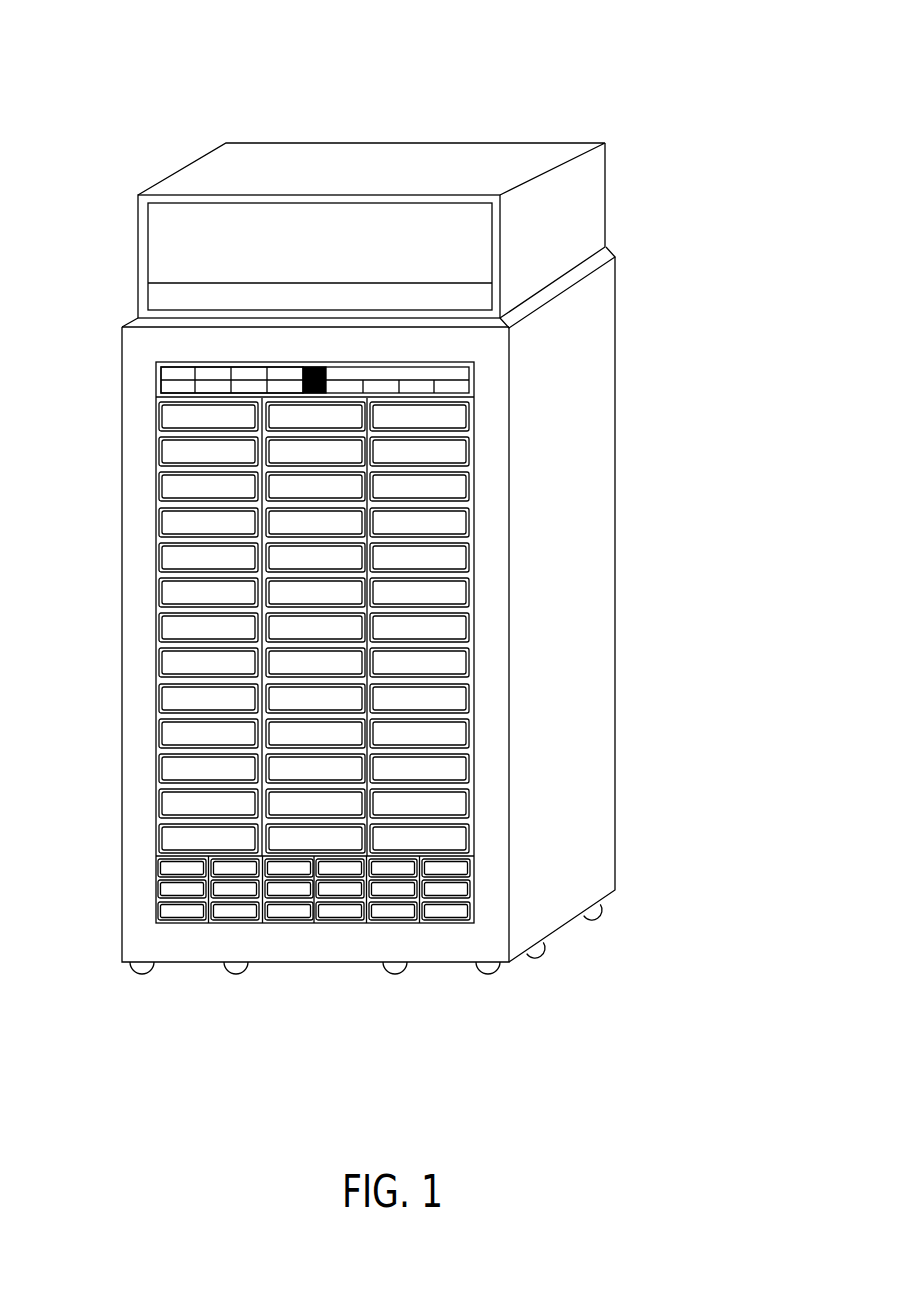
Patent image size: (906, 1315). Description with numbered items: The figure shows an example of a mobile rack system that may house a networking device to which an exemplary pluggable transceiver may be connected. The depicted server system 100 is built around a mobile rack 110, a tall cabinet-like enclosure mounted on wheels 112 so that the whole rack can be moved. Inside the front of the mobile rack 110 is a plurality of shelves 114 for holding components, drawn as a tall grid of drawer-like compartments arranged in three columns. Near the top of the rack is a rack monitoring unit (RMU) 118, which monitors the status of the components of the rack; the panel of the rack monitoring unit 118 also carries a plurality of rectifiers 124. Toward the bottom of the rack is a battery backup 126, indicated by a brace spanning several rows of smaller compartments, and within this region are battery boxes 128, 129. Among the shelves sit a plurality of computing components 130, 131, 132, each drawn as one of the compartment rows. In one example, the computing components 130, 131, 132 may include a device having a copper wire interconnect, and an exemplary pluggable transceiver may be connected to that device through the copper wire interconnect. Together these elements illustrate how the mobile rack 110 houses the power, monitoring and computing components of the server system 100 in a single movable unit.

The server system 100 is at (811, 29).
The mobile rack 110 is at (578, 610).
The wheels 112 is at (503, 978).
The shelves 114 is at (474, 547).
The rack monitoring unit 118 is at (474, 380).
The rectifiers 124 is at (156, 395).
The battery backup 126 is at (150, 853).
The battery box 128 is at (474, 873).
The battery box 129 is at (474, 920).
The computing component 130 is at (474, 813).
The computing component 131 is at (474, 742).
The computing component 132 is at (474, 672).